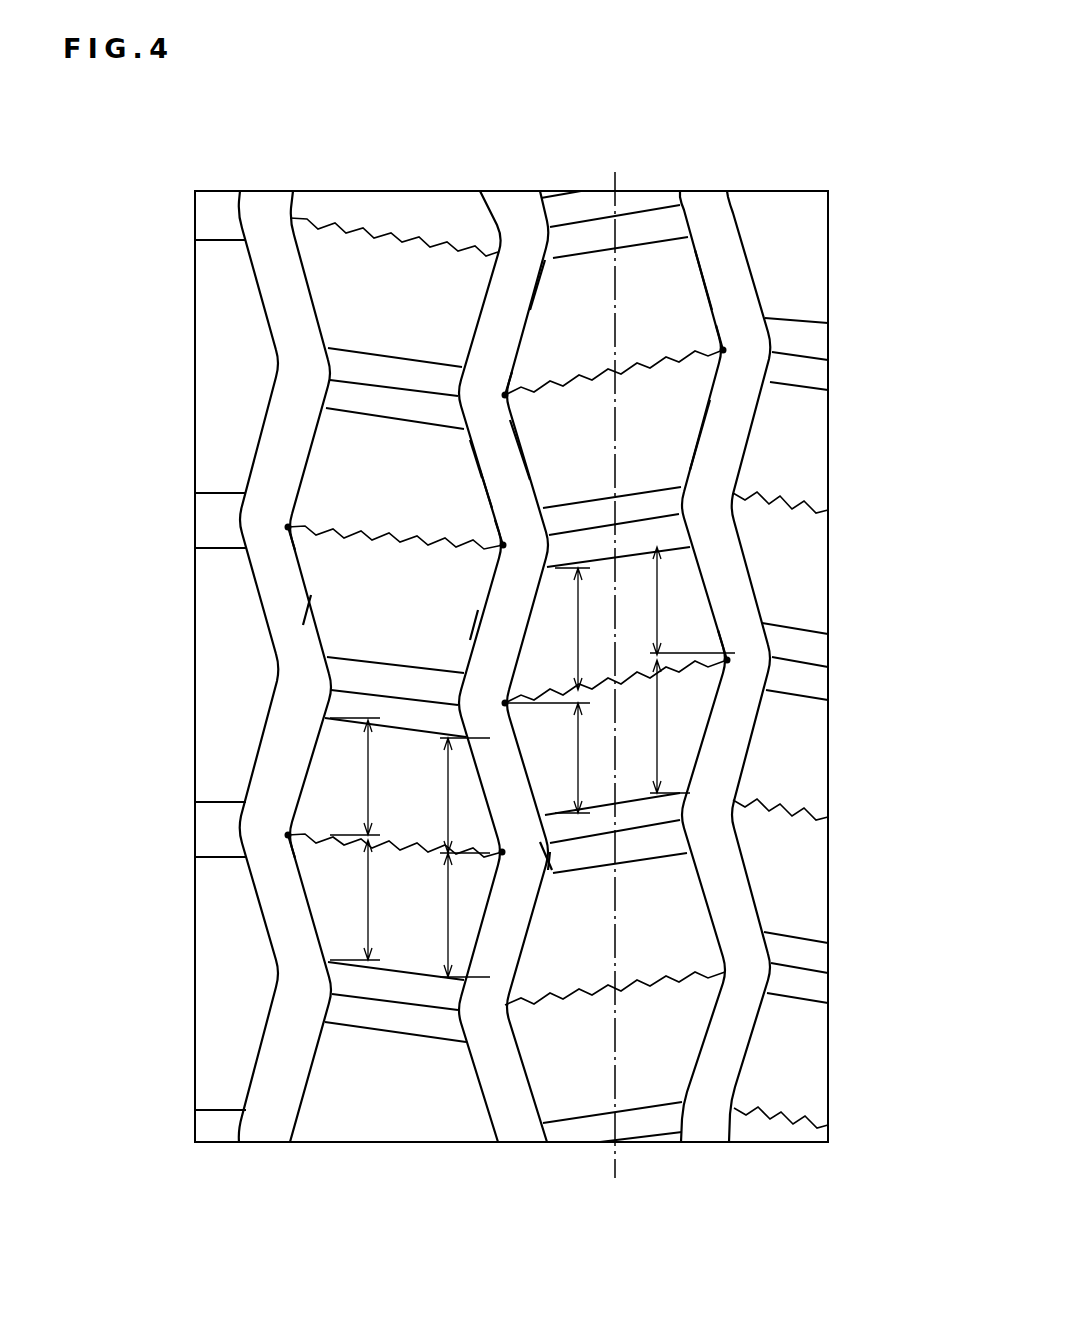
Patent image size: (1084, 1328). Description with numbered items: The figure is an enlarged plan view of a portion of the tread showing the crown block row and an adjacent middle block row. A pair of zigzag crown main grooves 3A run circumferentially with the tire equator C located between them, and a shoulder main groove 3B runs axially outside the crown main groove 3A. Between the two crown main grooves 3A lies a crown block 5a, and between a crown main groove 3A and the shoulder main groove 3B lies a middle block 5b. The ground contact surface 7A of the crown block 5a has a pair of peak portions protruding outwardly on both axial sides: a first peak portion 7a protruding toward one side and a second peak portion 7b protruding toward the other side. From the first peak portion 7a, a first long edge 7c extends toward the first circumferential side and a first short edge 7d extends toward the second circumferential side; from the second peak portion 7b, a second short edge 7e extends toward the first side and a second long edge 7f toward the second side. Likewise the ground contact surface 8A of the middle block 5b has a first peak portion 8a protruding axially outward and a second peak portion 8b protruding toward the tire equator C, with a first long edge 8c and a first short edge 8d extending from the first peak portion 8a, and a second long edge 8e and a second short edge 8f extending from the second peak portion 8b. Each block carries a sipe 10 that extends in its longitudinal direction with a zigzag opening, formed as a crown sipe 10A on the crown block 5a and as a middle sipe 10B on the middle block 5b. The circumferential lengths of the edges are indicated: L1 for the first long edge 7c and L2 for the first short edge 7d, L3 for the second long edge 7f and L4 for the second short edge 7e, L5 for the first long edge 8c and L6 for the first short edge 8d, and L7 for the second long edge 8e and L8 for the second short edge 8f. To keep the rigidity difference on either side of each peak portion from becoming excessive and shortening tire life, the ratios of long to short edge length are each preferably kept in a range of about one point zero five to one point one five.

The crown main groove 3A is at (509, 1100).
The shoulder main groove 3B is at (267, 238).
The crown block 5a is at (606, 621).
The ground contact surface of crown block 7A is at (585, 288).
The middle block 5b is at (258, 695).
The ground contact surface of middle block 8A is at (343, 927).
The first peak portion 7a is at (723, 350).
The second peak portion 7b is at (505, 395).
The first long edge 7c is at (700, 435).
The first short edge 7d is at (705, 280).
The second short edge 7e is at (522, 453).
The second long edge 7f is at (537, 295).
The first peak portion 8a is at (286, 527).
The second peak portion 8b is at (503, 545).
The first long edge 8c is at (307, 607).
The first short edge 8d is at (489, 500).
The second long edge 8e is at (470, 627).
The second short edge 8f is at (478, 468).
The sipe 10 is at (504, 611).
The crown sipe 10A is at (660, 372).
The middle sipe 10B is at (286, 526).
The circumferential length of first long edge L1 is at (658, 730).
The circumferential length of first short edge L2 is at (658, 603).
The circumferential length of second long edge L3 is at (578, 633).
The circumferential length of second short edge L4 is at (578, 760).
The circumferential length of first long edge L5 is at (366, 898).
The circumferential length of first short edge L6 is at (366, 773).
The circumferential length of second long edge L7 is at (448, 927).
The circumferential length of second short edge L8 is at (447, 807).
The tire equator C is at (612, 659).